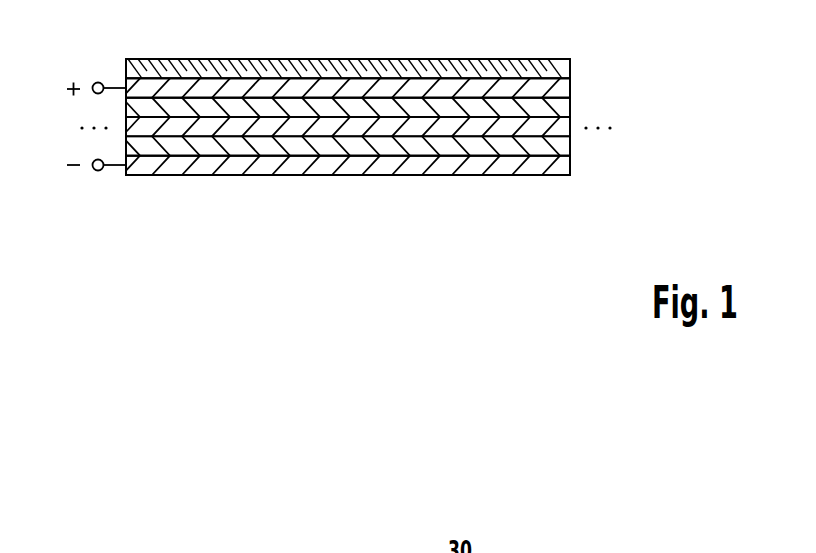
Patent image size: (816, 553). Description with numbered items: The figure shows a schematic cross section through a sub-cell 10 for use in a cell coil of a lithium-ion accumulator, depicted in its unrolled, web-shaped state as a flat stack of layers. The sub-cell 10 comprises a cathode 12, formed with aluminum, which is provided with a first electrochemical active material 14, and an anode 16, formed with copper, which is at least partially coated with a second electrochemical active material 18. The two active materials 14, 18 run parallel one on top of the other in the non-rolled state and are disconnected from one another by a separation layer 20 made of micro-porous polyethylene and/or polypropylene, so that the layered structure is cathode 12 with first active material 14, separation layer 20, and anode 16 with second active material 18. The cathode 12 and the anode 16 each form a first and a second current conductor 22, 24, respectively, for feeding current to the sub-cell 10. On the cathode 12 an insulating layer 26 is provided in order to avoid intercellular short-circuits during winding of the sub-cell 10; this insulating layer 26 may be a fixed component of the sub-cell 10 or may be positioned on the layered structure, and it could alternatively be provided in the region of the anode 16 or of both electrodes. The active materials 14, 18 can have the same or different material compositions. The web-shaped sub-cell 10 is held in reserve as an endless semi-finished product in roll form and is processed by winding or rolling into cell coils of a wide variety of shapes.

The sub-cell 10 is at (668, 58).
The cathode 12 is at (571, 88).
The first current conductor 22 is at (348, 87).
The first electrochemical active material 14 is at (571, 106).
The anode 16 is at (345, 176).
The second current conductor 24 is at (348, 165).
The second electrochemical active material 18 is at (571, 146).
The separation layer 20 is at (132, 129).
The insulating layer 26 is at (343, 58).